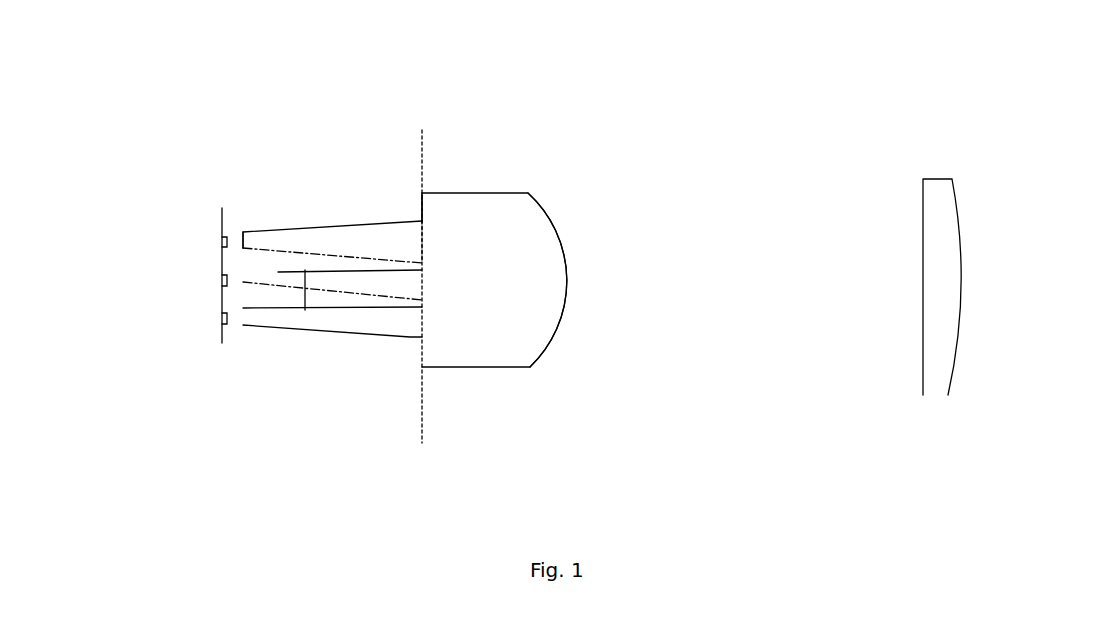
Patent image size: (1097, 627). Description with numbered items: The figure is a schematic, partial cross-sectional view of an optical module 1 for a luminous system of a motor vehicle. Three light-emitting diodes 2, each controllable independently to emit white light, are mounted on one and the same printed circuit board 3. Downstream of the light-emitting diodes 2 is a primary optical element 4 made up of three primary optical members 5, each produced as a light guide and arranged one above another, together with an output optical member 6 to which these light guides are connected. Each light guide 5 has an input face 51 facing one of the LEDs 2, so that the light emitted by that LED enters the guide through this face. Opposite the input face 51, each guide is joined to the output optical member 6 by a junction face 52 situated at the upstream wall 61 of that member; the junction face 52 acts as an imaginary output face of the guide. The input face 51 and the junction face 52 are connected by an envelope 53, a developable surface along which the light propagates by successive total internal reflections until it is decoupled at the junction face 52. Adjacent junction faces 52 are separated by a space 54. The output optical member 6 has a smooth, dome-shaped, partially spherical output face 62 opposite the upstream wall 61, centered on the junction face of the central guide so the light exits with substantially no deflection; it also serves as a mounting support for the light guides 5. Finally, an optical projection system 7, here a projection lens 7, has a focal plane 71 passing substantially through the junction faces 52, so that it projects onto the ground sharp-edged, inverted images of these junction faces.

The optical module 1 is at (473, 511).
The light-emitting diodes 2 is at (221, 318).
The printed circuit board 3 is at (220, 221).
The primary optical element 4 is at (368, 130).
The primary optical members 5 is at (363, 253).
The input face 51 is at (243, 317).
The junction face 52 is at (420, 318).
The envelope 53 is at (305, 310).
The space 54 is at (423, 307).
The output optical member 6 is at (500, 296).
The upstream wall 61 is at (425, 195).
The output face 62 is at (551, 210).
The projection lens 7 is at (923, 180).
The focal plane 71 is at (420, 430).